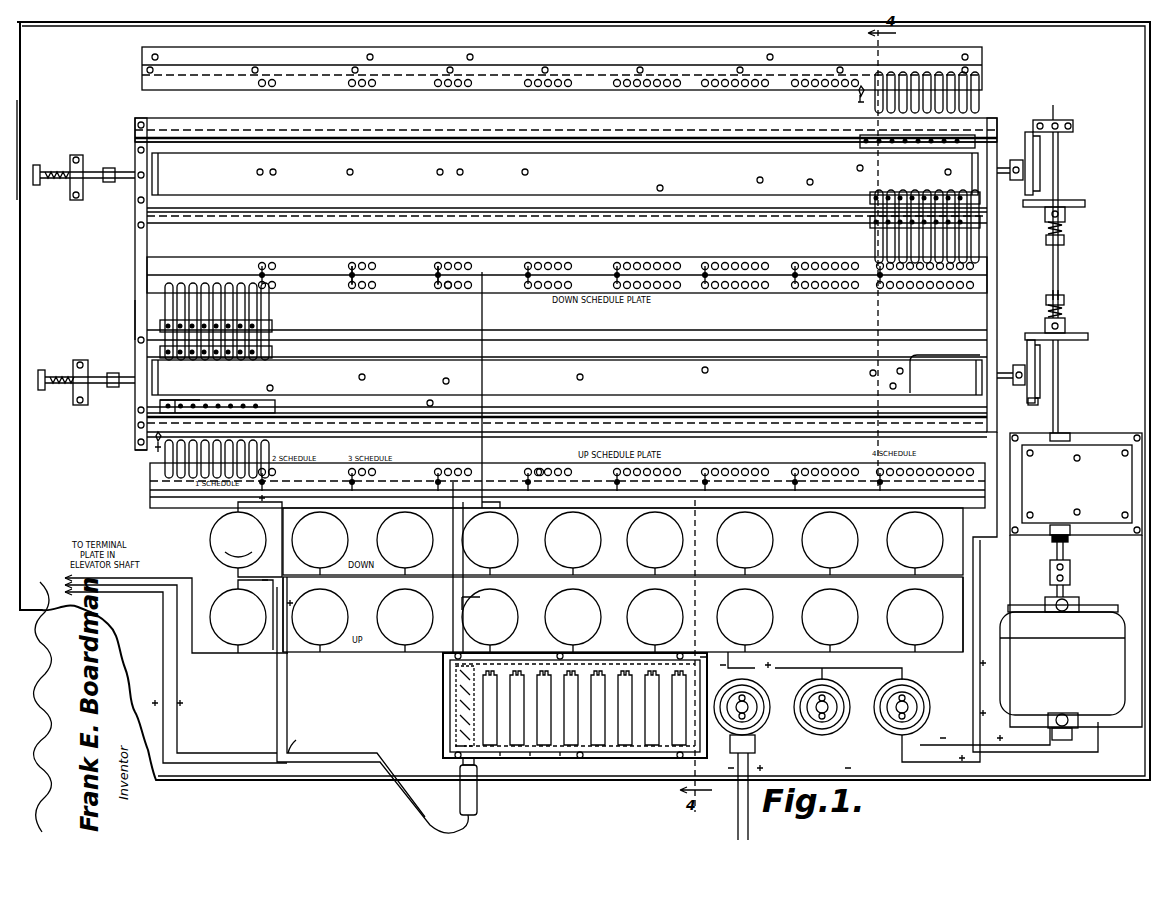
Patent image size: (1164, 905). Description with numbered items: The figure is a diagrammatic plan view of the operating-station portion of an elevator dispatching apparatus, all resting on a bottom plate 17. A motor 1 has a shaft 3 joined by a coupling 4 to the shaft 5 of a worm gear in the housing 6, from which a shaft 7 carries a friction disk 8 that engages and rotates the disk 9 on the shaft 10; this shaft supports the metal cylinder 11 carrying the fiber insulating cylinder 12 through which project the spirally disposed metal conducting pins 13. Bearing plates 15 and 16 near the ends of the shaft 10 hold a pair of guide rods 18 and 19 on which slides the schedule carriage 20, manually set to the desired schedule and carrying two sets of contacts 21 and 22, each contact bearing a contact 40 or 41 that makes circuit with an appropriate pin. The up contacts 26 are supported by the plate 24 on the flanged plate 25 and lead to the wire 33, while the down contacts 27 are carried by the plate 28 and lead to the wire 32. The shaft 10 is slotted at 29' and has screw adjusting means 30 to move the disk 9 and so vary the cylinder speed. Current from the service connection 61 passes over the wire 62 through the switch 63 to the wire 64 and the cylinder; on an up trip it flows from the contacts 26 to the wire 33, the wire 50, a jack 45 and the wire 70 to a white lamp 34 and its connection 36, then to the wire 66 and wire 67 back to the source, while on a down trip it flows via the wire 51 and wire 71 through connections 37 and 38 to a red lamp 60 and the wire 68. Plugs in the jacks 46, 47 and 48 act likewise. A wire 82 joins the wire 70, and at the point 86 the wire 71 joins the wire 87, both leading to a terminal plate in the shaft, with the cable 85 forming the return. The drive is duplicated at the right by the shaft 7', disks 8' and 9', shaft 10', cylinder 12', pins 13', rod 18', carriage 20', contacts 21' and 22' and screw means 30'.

The motor 1 is at (1062, 660).
The shaft of the motor 3 is at (1078, 595).
The coupling 4 is at (1072, 570).
The shaft of the worm gear 5 is at (1055, 548).
The housing 6 is at (1076, 484).
The shaft 7 is at (1078, 361).
The shaft 7' is at (1078, 216).
The friction disk 8 is at (1069, 343).
The disk 8' is at (1055, 194).
The disk 9 is at (1064, 371).
The disk 9' is at (1041, 112).
The shaft 10 is at (566, 362).
The shaft 10' is at (573, 182).
The metal cylinder 11 is at (1025, 165).
The fiber insulating cylinder 12 is at (945, 363).
The fiber insulating cylinder 12' is at (879, 145).
The metal conducting pins 13 is at (585, 364).
The metal conducting pins 13' is at (565, 174).
The supporting or bearing plate 15 is at (998, 274).
The supporting or bearing plate 16 is at (135, 319).
The bottom plate 17 is at (574, 275).
The guide rod 18 is at (567, 295).
The guide rod 18' is at (567, 231).
The guide rod 19 is at (501, 394).
The schedule or contact carriage 20 is at (245, 366).
The schedule or contact carriage 20' is at (909, 206).
The set of contacts 21 is at (234, 455).
The set of contacts 21' is at (953, 226).
The set of contacts 22 is at (237, 321).
The set of contacts 22' is at (944, 90).
The plate 24 is at (413, 470).
The flanged plate 25 is at (185, 510).
The up contacts 26 is at (540, 470).
The down contacts 27 is at (446, 292).
The plate 28 is at (308, 272).
The slot 29' is at (1027, 410).
The screw adjusting means 30 is at (86, 373).
The screw adjusting means 30' is at (84, 165).
The wire 32 is at (400, 272).
The wire 33 is at (410, 490).
The white lamp 34 is at (928, 597).
The connection 36 is at (256, 634).
The connection 37 is at (238, 540).
The connection 38 is at (238, 556).
The contact 40 is at (255, 404).
The contact 41 is at (195, 391).
The jack 45 is at (458, 712).
The jack 46 is at (500, 756).
The jack 47 is at (530, 756).
The jack 48 is at (560, 756).
The wire 50 is at (465, 600).
The wire 51 is at (482, 385).
The red lamp 60 is at (245, 533).
The service connection 61 is at (758, 686).
The wire 62 is at (804, 660).
The switch 63 is at (840, 695).
The wire 64 is at (968, 590).
The wire 66 is at (741, 658).
The wire 67 is at (738, 790).
The wire 68 is at (963, 614).
The wire 70 is at (277, 684).
The wire 71 is at (287, 690).
The wire 82 is at (108, 593).
The flexible wire or cable 85 is at (162, 590).
The point 86 is at (305, 738).
The wire 87 is at (146, 590).